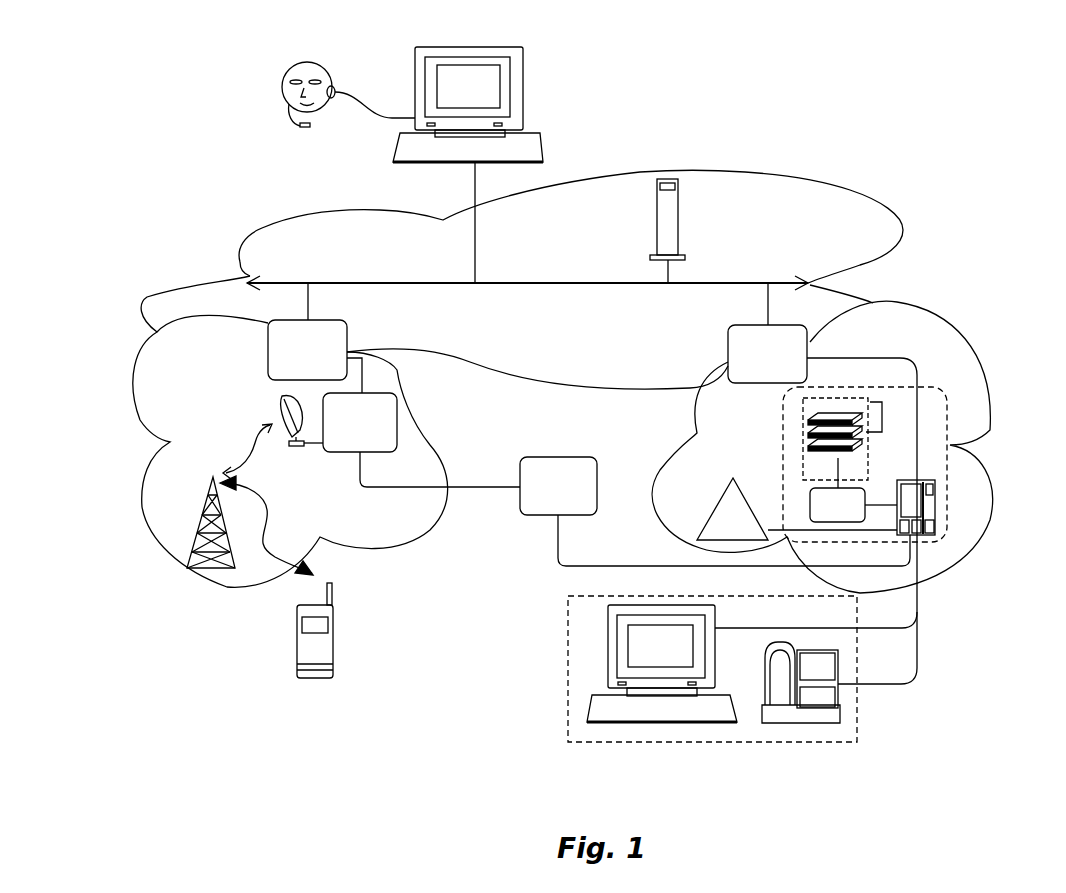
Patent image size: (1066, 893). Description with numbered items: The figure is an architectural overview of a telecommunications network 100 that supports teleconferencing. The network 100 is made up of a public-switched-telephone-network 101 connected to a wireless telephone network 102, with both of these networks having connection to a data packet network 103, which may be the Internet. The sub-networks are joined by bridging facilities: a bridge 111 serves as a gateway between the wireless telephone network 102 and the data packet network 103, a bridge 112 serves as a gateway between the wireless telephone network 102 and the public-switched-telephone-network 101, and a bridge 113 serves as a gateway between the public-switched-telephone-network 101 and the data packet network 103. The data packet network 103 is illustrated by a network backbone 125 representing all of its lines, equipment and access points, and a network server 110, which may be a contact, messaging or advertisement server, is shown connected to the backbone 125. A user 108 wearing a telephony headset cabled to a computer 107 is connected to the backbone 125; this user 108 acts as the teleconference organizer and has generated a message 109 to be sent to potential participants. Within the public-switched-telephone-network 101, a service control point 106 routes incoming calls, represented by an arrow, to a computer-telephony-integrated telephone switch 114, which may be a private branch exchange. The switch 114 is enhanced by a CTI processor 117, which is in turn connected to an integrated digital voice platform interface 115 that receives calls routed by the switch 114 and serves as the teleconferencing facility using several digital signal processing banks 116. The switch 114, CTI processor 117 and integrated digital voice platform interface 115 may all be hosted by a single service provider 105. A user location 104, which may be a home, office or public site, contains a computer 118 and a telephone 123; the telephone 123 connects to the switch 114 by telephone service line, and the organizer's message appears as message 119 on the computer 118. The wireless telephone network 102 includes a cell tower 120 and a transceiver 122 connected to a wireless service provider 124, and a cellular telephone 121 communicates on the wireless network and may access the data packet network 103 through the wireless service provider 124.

The telecommunications network 100 is at (976, 221).
The public-switched-telephone-network 101 is at (1015, 379).
The wireless telephone network 102 is at (115, 413).
The data packet network 103 is at (222, 261).
The user location 104 is at (562, 630).
The service provider 105 is at (972, 495).
The service control point 106 is at (712, 505).
The computer 107 is at (524, 104).
The user 108 is at (306, 62).
The message 109 is at (437, 97).
The network server 110 is at (656, 199).
The bridge 111 is at (347, 340).
The bridge 112 is at (550, 457).
The bridge 113 is at (750, 325).
The computer-telephony-integrated telephone switch 114 is at (935, 508).
The integrated digital voice platform interface 115 is at (798, 446).
The digital signal processing banks 116 is at (884, 432).
The CTI processor 117 is at (810, 508).
The computer 118 is at (608, 653).
The message 119 is at (693, 645).
The cell tower 120 is at (198, 535).
The cellular telephone 121 is at (334, 640).
The transceiver 122 is at (295, 447).
The telephone 123 is at (840, 700).
The wireless service provider 124 is at (397, 430).
The network backbone 125 is at (426, 283).